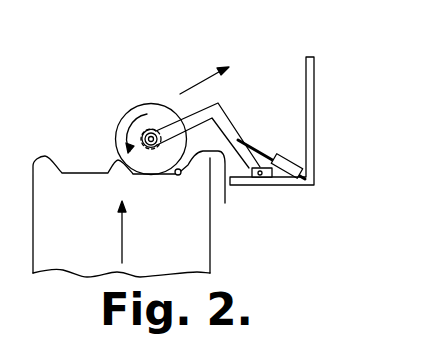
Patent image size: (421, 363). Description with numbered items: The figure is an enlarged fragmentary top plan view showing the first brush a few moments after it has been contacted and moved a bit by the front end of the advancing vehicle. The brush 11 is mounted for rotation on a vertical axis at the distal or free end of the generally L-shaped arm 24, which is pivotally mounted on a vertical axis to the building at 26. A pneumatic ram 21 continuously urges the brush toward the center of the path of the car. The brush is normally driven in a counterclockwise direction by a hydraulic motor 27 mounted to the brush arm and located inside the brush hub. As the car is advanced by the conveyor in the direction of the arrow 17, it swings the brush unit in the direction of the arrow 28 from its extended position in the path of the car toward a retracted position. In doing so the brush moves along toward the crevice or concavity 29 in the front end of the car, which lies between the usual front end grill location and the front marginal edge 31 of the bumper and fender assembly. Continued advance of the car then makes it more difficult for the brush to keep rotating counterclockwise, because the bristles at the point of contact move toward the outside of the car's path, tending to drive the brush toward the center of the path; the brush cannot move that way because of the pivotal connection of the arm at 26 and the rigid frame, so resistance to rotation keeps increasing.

The brush 11 is at (124, 118).
The arrow 17 is at (120, 233).
The pneumatic ram 21 is at (289, 162).
The L-shaped arm 24 is at (229, 125).
The pivotal mounting 26 is at (261, 178).
The hydraulic motor 27 is at (153, 128).
The arrow 28 is at (198, 73).
The crevice or concavity 29 is at (178, 175).
The front marginal edge 31 is at (209, 191).